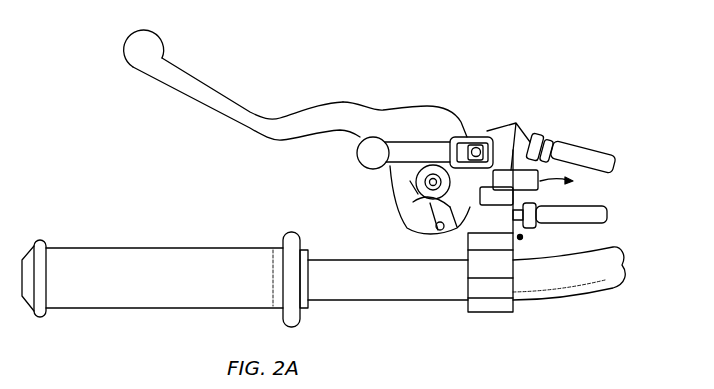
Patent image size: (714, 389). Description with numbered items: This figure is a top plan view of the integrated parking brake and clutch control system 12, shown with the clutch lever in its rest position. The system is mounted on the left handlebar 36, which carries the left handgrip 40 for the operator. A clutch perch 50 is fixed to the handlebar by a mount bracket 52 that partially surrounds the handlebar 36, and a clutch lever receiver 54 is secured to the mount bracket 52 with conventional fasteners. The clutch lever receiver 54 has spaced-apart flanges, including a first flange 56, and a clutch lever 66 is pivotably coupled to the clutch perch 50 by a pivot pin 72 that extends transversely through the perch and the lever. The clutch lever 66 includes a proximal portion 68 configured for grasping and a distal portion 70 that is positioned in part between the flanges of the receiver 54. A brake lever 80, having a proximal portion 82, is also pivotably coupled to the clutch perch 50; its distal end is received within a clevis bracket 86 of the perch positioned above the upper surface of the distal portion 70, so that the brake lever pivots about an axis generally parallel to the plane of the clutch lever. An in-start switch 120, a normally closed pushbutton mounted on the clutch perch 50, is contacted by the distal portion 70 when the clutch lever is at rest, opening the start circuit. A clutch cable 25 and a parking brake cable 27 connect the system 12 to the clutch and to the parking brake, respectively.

The integrated parking brake and clutch control system 12 is at (467, 69).
The clutch cable 25 is at (604, 142).
The parking brake cable 27 is at (592, 191).
The left handlebar 36 is at (407, 301).
The left handgrip 40 is at (159, 310).
The clutch perch 50 is at (507, 129).
The mount bracket 52 is at (490, 314).
The clutch lever receiver 54 is at (522, 237).
The first flange 56 is at (408, 233).
The clutch lever 66 is at (182, 66).
The proximal portion 68 is at (227, 97).
The distal portion 70 is at (440, 107).
The pivot pin 72 is at (398, 193).
The brake lever 80 is at (351, 157).
The proximal portion 82 is at (365, 135).
The clevis bracket 86 is at (466, 130).
The in-start switch 120 is at (533, 135).